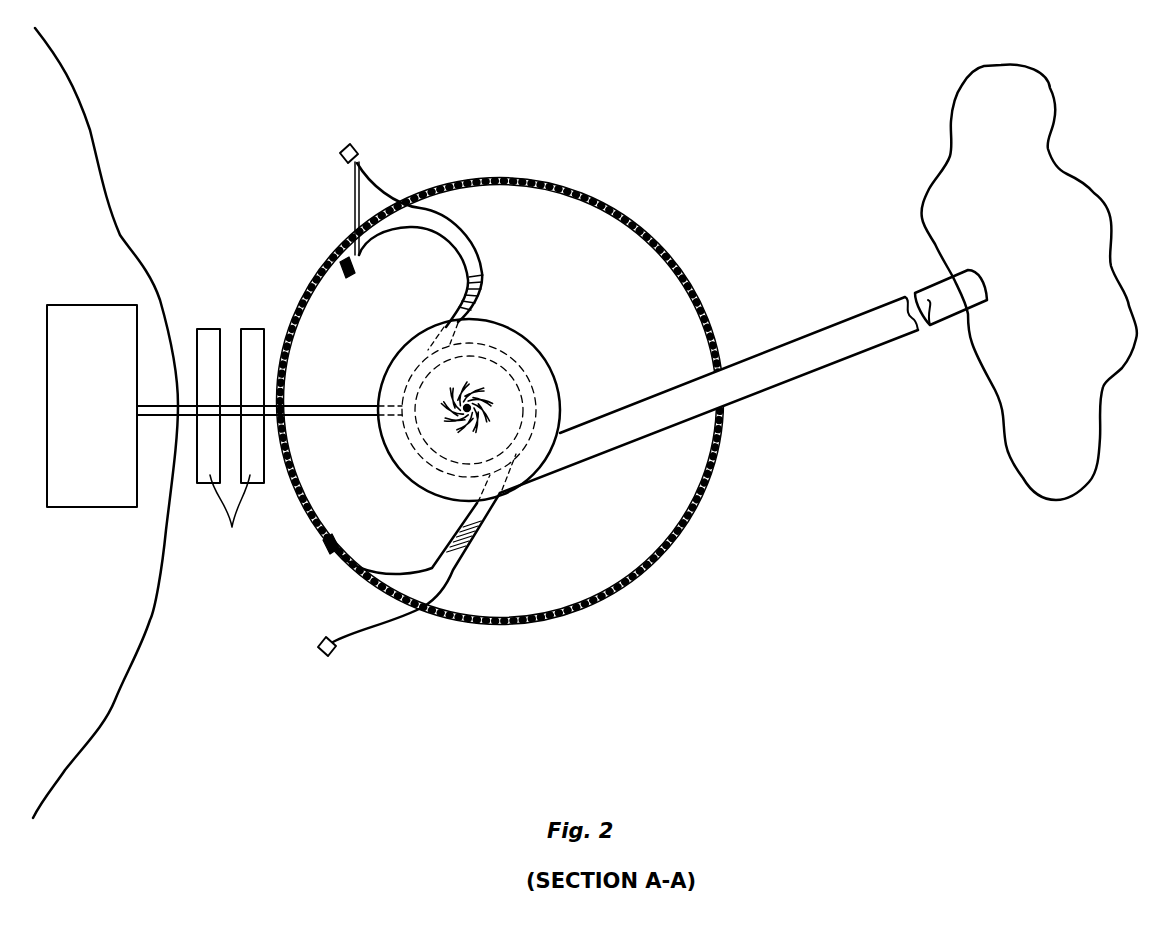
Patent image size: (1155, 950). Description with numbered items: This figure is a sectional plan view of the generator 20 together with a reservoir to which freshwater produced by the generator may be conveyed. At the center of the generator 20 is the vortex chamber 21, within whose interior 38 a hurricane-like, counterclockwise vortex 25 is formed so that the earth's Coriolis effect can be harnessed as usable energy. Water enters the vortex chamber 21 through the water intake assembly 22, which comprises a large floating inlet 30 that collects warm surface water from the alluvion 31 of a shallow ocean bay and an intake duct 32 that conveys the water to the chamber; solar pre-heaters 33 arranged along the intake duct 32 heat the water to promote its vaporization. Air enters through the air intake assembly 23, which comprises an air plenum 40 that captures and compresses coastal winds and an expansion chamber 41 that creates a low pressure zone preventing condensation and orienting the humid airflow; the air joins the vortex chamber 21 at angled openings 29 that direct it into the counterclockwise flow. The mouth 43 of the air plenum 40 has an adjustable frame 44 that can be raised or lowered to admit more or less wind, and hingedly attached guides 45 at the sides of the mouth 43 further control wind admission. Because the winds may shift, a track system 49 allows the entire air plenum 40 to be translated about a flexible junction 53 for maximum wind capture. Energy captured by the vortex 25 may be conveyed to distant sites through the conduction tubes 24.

The generator 20 is at (598, 110).
The vortex chamber 21 is at (527, 358).
The water intake assembly 22 is at (226, 296).
The air intake assembly 23 is at (412, 660).
The conduction tubes 24 is at (743, 381).
The vortex 25 is at (450, 388).
The angled openings 29 is at (512, 443).
The floating inlet 30 is at (92, 406).
The alluvion 31 is at (105, 423).
The intake duct 32 is at (287, 518).
The pre-heaters 33 is at (230, 516).
The interior 38 is at (471, 448).
The air plenum 40 is at (371, 598).
The expansion chamber 41 is at (498, 482).
The mouth 43 is at (350, 203).
The adjustable frame 44 is at (355, 151).
The guides 45 is at (334, 533).
The track system 49 is at (574, 192).
The flexible junction 53 is at (481, 296).